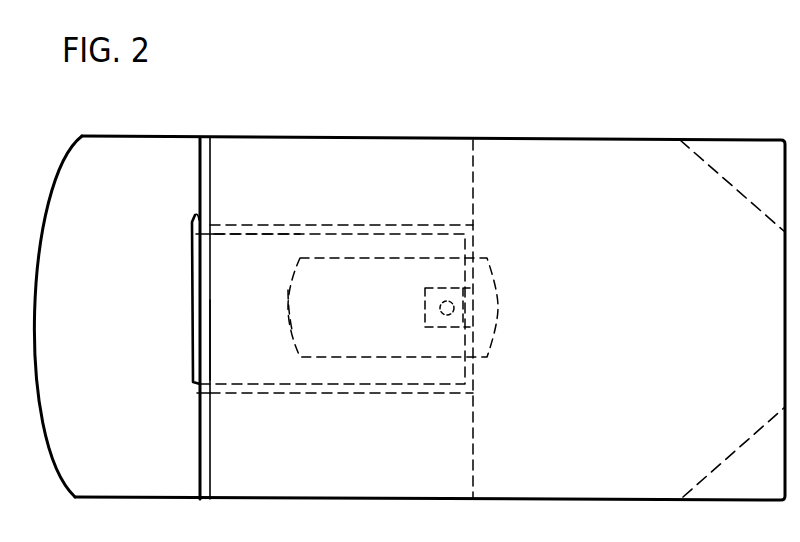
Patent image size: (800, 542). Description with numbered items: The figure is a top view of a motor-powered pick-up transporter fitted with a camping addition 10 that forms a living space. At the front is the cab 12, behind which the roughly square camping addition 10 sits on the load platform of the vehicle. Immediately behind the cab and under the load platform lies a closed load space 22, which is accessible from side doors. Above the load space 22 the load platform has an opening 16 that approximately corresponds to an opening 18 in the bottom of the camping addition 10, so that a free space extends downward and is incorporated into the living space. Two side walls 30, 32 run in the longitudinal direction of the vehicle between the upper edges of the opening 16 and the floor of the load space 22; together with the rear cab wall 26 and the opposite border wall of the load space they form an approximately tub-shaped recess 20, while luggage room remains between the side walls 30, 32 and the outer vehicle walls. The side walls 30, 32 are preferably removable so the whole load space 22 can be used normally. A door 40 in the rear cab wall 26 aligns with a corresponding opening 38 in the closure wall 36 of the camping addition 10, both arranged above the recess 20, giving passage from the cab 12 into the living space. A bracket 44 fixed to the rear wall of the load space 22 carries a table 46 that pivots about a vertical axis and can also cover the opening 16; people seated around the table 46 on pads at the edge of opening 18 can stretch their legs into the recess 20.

The camping addition 10 is at (580, 135).
The cab 12 is at (102, 314).
The opening 16 is at (262, 233).
The opening 18 is at (363, 234).
The recess 20 is at (275, 304).
The load space 22 is at (458, 436).
The rear cab wall 26 is at (180, 299).
The side wall 30 is at (313, 225).
The side wall 32 is at (305, 394).
The closure wall 36 is at (225, 301).
The opening 38 is at (211, 348).
The door 40 is at (192, 304).
The bracket 44 is at (430, 320).
The table 46 is at (289, 310).